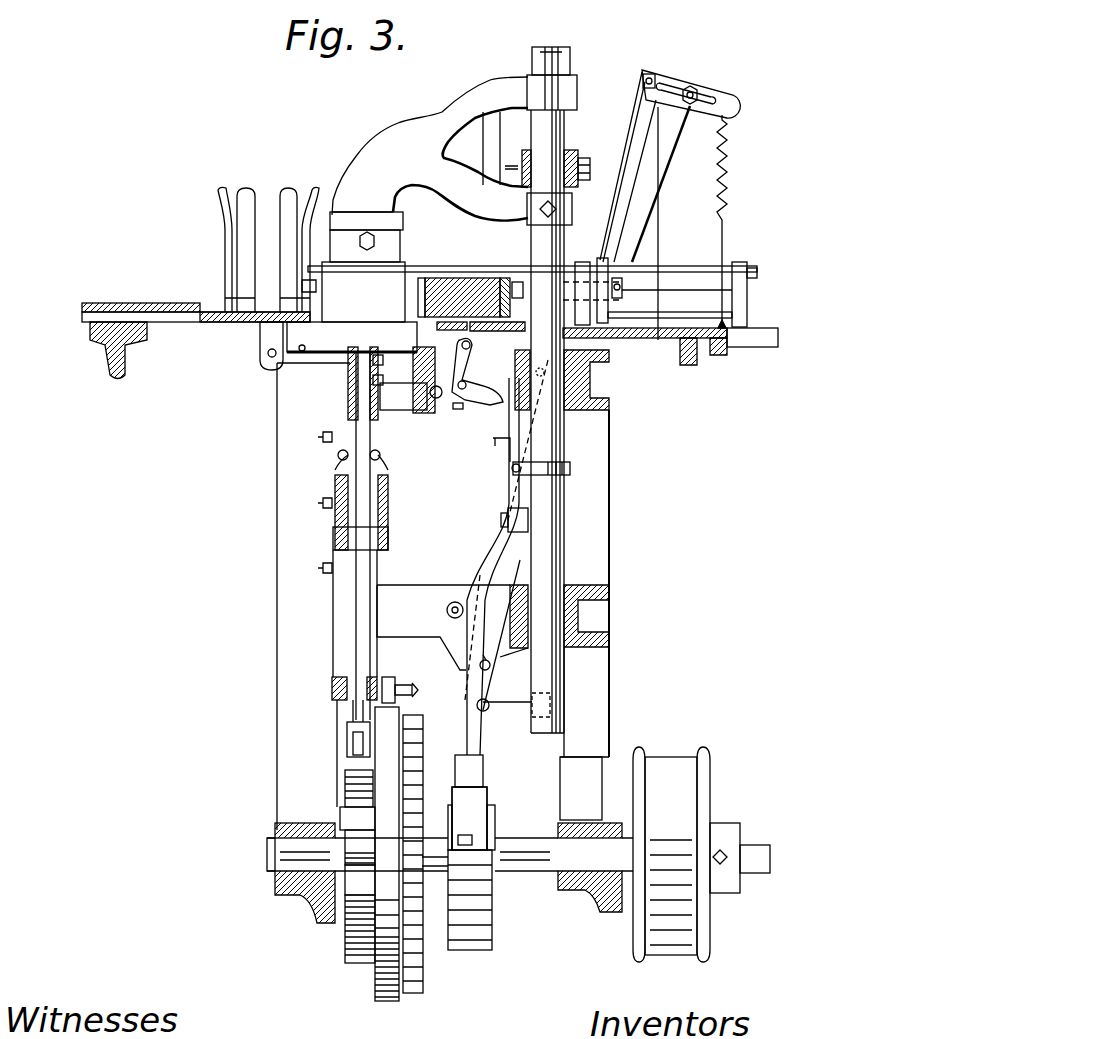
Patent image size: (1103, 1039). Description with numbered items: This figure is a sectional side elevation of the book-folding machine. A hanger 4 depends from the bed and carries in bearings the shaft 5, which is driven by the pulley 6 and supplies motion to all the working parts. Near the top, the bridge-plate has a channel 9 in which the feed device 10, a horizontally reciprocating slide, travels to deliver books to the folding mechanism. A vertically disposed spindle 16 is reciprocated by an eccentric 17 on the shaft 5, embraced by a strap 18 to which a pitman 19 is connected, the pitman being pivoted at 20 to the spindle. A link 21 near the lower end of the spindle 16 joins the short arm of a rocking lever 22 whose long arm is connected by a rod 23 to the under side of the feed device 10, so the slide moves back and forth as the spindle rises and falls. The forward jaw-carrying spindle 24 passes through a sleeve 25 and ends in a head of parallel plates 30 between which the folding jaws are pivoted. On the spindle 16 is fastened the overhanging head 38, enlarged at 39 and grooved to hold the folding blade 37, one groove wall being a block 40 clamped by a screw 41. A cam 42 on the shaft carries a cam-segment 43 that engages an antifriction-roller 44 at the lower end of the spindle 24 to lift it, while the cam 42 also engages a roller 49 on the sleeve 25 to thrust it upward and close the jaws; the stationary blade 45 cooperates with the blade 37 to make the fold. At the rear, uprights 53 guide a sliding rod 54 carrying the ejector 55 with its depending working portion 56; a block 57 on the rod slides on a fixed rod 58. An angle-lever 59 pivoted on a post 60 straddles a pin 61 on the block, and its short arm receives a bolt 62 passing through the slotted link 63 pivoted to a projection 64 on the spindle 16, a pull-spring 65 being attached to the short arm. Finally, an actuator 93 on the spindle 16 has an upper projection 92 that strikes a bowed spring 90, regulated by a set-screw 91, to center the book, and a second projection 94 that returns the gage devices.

The hanger 4 is at (322, 440).
The shaft 5 is at (528, 871).
The pulley 6 is at (672, 950).
The channel 9 is at (100, 315).
The feed device 10 is at (240, 325).
The spindle 16 is at (555, 530).
The eccentric 17 is at (490, 935).
The strap 18 is at (475, 815).
The pitman 19 is at (464, 735).
The pivot 20 is at (501, 520).
The link 21 is at (512, 715).
The rocking lever 22 is at (490, 680).
The rod 23 is at (325, 372).
The spindle 24 is at (358, 700).
The sleeve 25 is at (382, 580).
The parallel plates 30 is at (340, 410).
The folding blade 37 is at (405, 268).
The overhanging head 38 is at (575, 108).
The enlarged portion 39 is at (395, 227).
The block 40 is at (380, 245).
The screw 41 is at (378, 192).
The cam 42 is at (375, 985).
The cam-segment 43 is at (350, 940).
The antifriction-roller 44 is at (358, 750).
The stationary blade 45 is at (352, 336).
The antifriction-roller 49 is at (390, 680).
The uprights 53 is at (590, 258).
The sliding rod 54 is at (700, 268).
The ejector 55 is at (363, 292).
The depending working portion 56 is at (302, 285).
The block 57 is at (650, 240).
The fixed rod 58 is at (660, 345).
The angle-lever 59 is at (678, 80).
The post 60 is at (660, 215).
The pin 61 is at (640, 292).
The bolt 62 is at (700, 96).
The link 63 is at (685, 140).
The projection 64 is at (550, 310).
The coiled pull-spring 65 is at (725, 172).
The bowed spring 90 is at (498, 450).
The set-screw 91 is at (460, 410).
The upper projection 92 is at (533, 426).
The actuator 93 is at (520, 445).
The second projection 94 is at (492, 489).